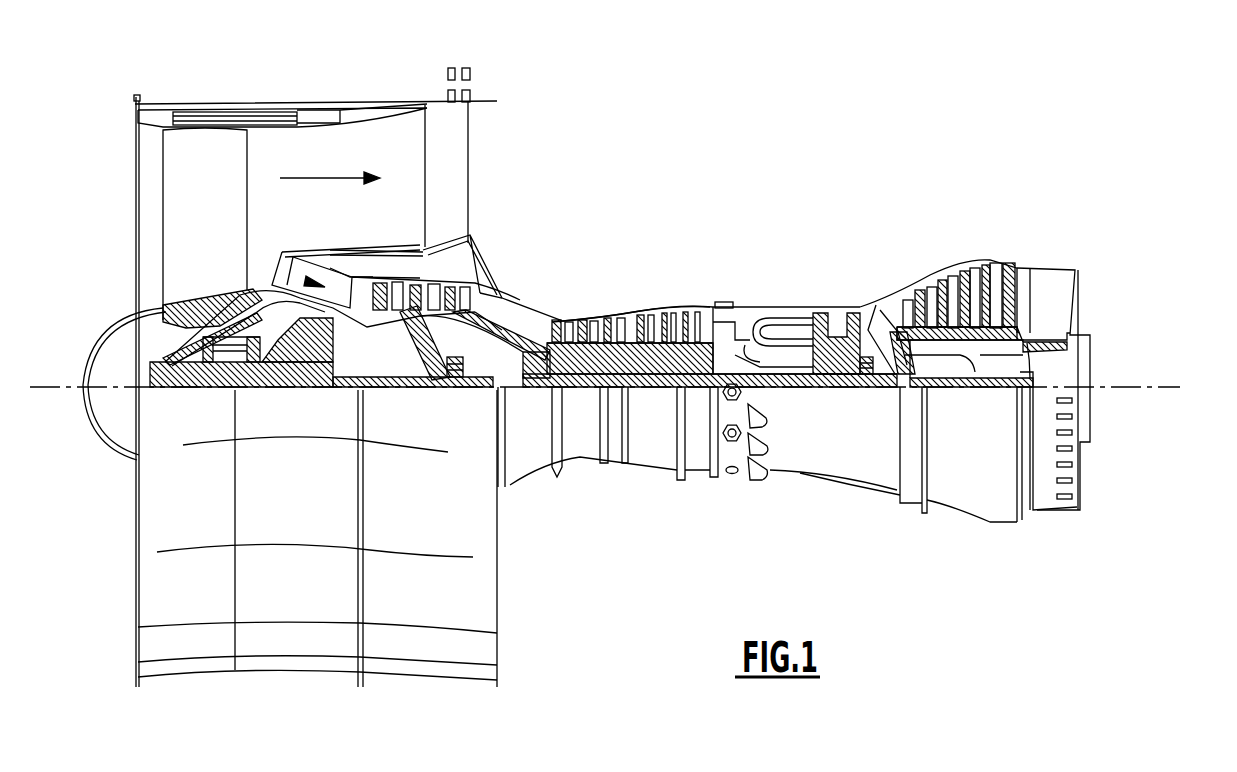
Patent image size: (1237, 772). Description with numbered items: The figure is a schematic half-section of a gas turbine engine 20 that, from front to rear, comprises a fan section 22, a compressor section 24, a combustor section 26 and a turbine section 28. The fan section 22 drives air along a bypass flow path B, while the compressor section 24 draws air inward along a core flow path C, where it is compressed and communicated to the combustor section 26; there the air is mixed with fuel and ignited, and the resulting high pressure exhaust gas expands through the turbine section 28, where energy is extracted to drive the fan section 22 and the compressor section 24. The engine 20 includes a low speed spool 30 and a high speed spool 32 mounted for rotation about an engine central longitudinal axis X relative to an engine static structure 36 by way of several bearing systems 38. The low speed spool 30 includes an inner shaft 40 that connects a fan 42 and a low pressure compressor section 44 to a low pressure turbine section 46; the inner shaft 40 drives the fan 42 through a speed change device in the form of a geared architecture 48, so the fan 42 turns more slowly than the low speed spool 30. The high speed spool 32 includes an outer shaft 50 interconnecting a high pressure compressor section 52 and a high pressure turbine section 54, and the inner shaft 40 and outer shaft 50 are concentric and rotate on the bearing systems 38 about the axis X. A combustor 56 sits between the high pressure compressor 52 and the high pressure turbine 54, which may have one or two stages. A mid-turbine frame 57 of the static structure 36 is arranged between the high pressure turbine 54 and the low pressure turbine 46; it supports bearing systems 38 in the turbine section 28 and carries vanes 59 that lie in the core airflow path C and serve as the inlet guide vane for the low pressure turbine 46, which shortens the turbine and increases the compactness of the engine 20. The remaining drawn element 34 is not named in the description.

The gas turbine engine 20 is at (773, 157).
The fan section 22 is at (343, 78).
The compressor section 24 is at (357, 222).
The combustor section 26 is at (808, 222).
The turbine section 28 is at (1030, 222).
The low speed spool 30 is at (655, 390).
The high speed spool 32 is at (702, 327).
The low pressure turbine 34 is at (968, 385).
The engine static structure 36 is at (696, 473).
The bearing systems 38 is at (212, 387).
The inner shaft 40 is at (513, 390).
The fan 42 is at (222, 237).
The low pressure compressor section 44 is at (433, 287).
The low pressure turbine section 46 is at (963, 283).
The geared architecture 48 is at (325, 372).
The outer shaft 50 is at (783, 390).
The high pressure compressor section 52 is at (632, 357).
The high pressure turbine section 54 is at (838, 307).
The combustor 56 is at (770, 330).
The mid-turbine frame 57 is at (879, 299).
The vanes 59 is at (910, 388).
The engine central longitudinal axis X is at (1170, 387).
The bypass flow path B is at (322, 178).
The core flow path C is at (308, 280).